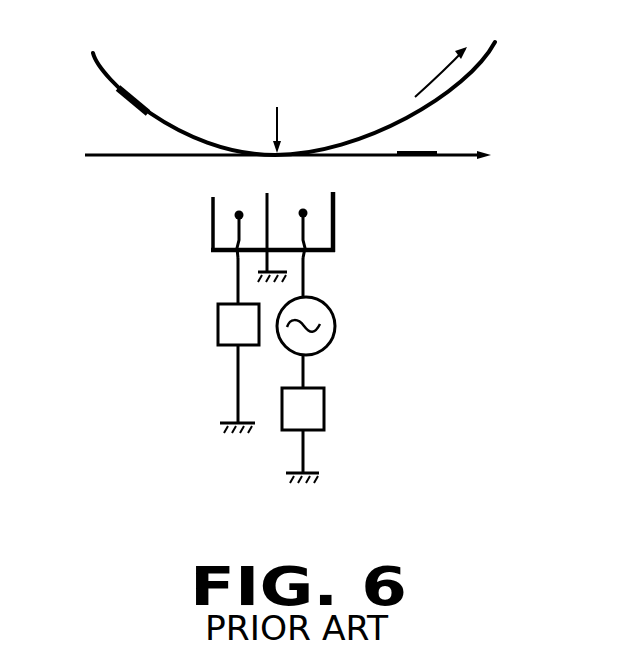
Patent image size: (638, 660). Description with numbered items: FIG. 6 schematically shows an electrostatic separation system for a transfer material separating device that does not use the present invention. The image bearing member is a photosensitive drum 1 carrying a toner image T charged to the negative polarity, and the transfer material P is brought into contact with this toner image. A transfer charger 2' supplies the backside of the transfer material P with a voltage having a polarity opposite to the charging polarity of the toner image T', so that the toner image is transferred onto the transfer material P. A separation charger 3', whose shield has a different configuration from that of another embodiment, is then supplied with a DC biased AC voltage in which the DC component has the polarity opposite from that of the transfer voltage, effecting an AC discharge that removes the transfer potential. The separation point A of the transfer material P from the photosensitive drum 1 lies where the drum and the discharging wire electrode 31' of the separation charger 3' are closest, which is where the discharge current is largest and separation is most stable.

The photosensitive drum 1 is at (108, 70).
The transfer charger 2' is at (268, 248).
The separation charger 3' is at (351, 370).
The discharging wire electrode 31' is at (378, 222).
The separation point A is at (274, 110).
The transfer material P is at (302, 157).
The toner image T is at (442, 127).
The toner image T' is at (96, 106).